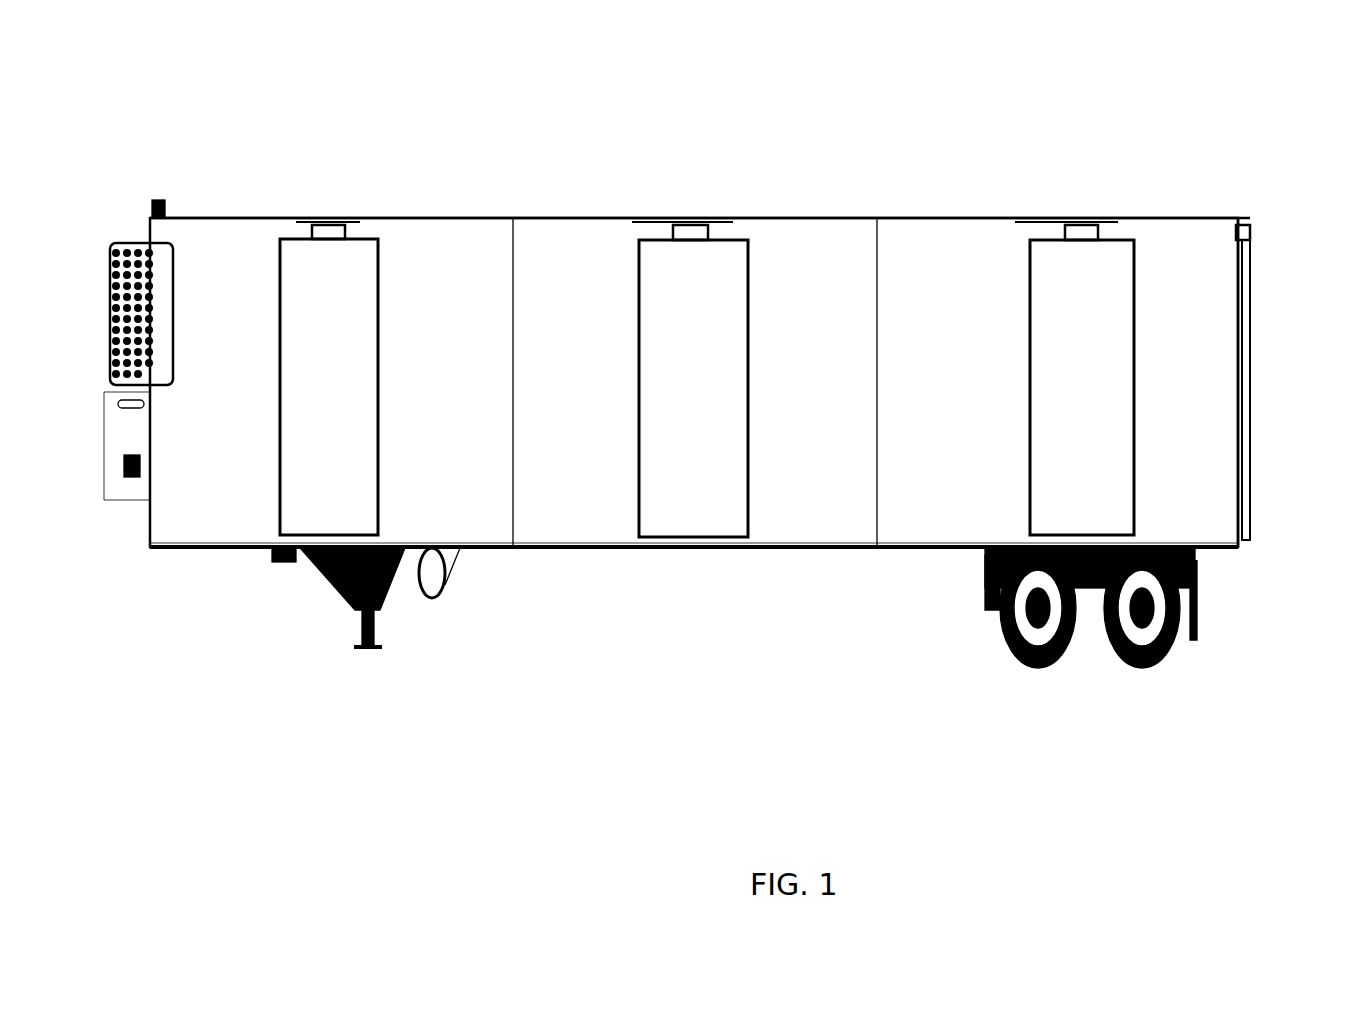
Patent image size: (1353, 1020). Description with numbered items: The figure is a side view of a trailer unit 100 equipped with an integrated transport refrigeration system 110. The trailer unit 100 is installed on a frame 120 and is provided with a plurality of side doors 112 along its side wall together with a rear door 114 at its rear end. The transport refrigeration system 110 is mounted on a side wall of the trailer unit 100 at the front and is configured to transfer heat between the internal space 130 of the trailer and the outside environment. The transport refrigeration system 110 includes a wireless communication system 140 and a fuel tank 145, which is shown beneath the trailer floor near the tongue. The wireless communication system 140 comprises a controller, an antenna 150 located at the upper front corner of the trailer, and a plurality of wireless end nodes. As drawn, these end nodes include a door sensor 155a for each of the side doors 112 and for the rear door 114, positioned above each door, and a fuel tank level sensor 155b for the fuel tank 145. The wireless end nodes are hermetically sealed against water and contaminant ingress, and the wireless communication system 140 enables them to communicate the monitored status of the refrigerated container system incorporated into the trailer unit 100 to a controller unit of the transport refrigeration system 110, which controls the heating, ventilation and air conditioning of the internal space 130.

The trailer unit 100 is at (848, 175).
The transport refrigeration system 110 is at (125, 245).
The side doors 112 is at (317, 420).
The rear door 114 is at (1252, 313).
The frame 120 is at (580, 548).
The internal space 130 is at (572, 293).
The wireless communication system 140 is at (276, 122).
The fuel tank 145 is at (432, 592).
The antenna 150 is at (165, 205).
The door sensor 155a is at (328, 226).
The fuel tank level sensor 155b is at (462, 556).